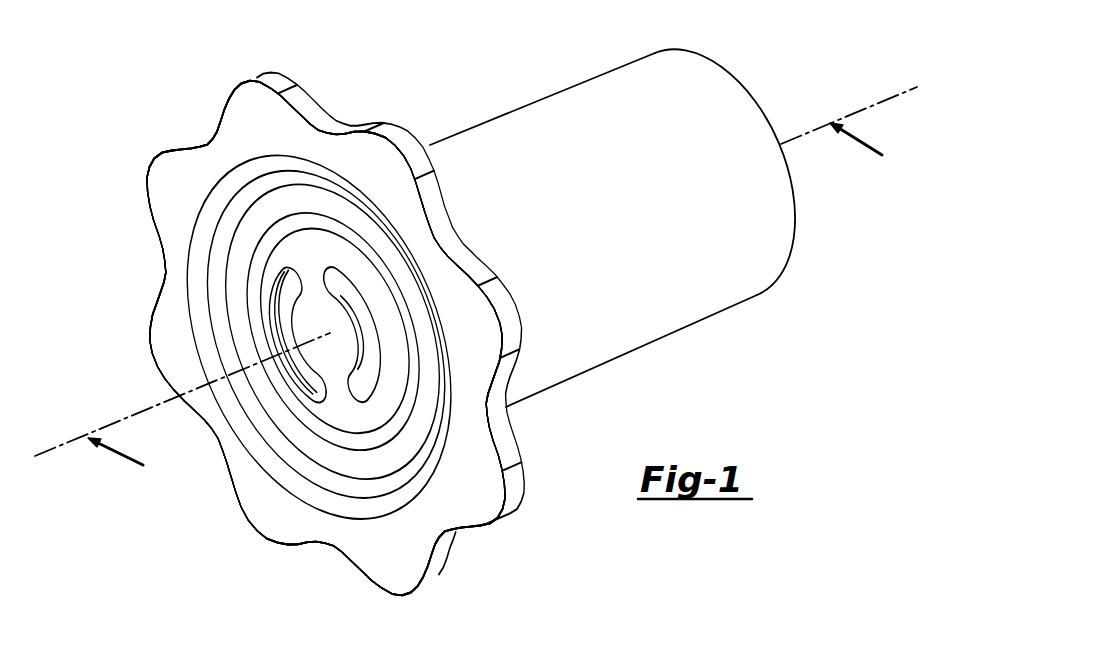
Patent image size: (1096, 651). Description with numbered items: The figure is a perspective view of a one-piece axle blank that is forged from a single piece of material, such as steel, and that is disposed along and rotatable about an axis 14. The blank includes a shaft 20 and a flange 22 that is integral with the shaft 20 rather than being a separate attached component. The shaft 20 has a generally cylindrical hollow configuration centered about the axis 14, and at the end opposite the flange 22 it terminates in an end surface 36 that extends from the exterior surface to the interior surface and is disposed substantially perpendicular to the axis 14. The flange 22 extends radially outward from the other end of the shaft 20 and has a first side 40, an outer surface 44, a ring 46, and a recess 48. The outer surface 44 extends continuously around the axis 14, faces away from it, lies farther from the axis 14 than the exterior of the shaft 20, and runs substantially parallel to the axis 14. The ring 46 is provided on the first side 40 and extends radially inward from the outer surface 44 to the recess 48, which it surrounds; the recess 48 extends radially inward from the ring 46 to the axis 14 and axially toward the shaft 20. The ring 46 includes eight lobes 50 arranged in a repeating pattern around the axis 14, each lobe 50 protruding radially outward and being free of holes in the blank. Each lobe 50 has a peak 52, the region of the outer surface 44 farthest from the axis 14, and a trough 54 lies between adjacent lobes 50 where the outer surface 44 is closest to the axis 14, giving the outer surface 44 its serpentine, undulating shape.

The axis 14 is at (887, 100).
The shaft 20 is at (578, 85).
The flange 22 is at (230, 102).
The end surface 36 is at (733, 80).
The first side 40 is at (297, 512).
The outer surface 44 is at (507, 435).
The ring 46 is at (150, 222).
The recess 48 is at (400, 457).
The lobes 50 is at (253, 78).
The peak 52 is at (257, 533).
The trough 54 is at (335, 125).